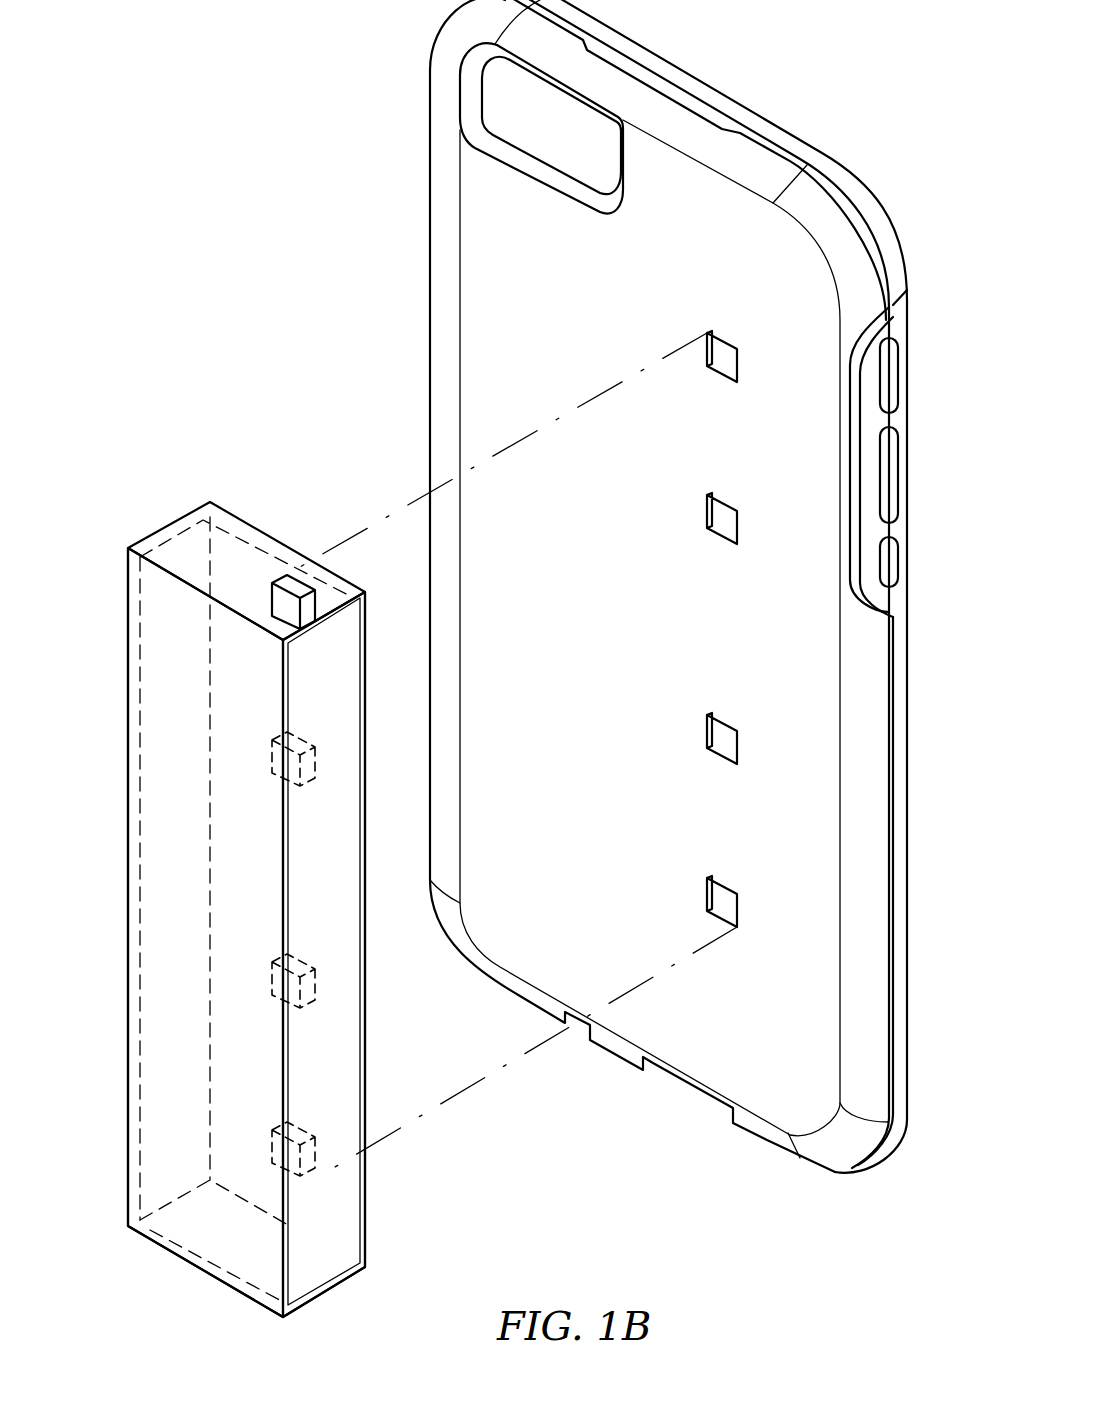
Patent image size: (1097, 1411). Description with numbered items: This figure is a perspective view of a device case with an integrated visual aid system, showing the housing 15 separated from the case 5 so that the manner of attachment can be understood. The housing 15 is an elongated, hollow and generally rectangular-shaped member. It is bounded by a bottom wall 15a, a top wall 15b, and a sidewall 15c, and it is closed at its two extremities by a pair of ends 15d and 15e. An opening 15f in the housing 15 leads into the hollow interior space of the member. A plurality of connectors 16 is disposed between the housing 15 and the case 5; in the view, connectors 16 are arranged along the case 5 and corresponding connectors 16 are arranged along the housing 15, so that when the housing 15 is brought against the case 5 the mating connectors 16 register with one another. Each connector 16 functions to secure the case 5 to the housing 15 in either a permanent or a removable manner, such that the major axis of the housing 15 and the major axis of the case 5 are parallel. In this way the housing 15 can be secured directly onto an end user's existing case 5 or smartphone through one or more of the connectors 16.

The protective case 5 is at (632, 312).
The housing 15 is at (278, 838).
The bottom wall 15a is at (367, 685).
The top wall 15b is at (262, 893).
The sidewall 15c is at (123, 608).
The end 15d is at (232, 560).
The end 15e is at (322, 1296).
The opening 15f is at (320, 925).
The connectors 16 is at (714, 364).